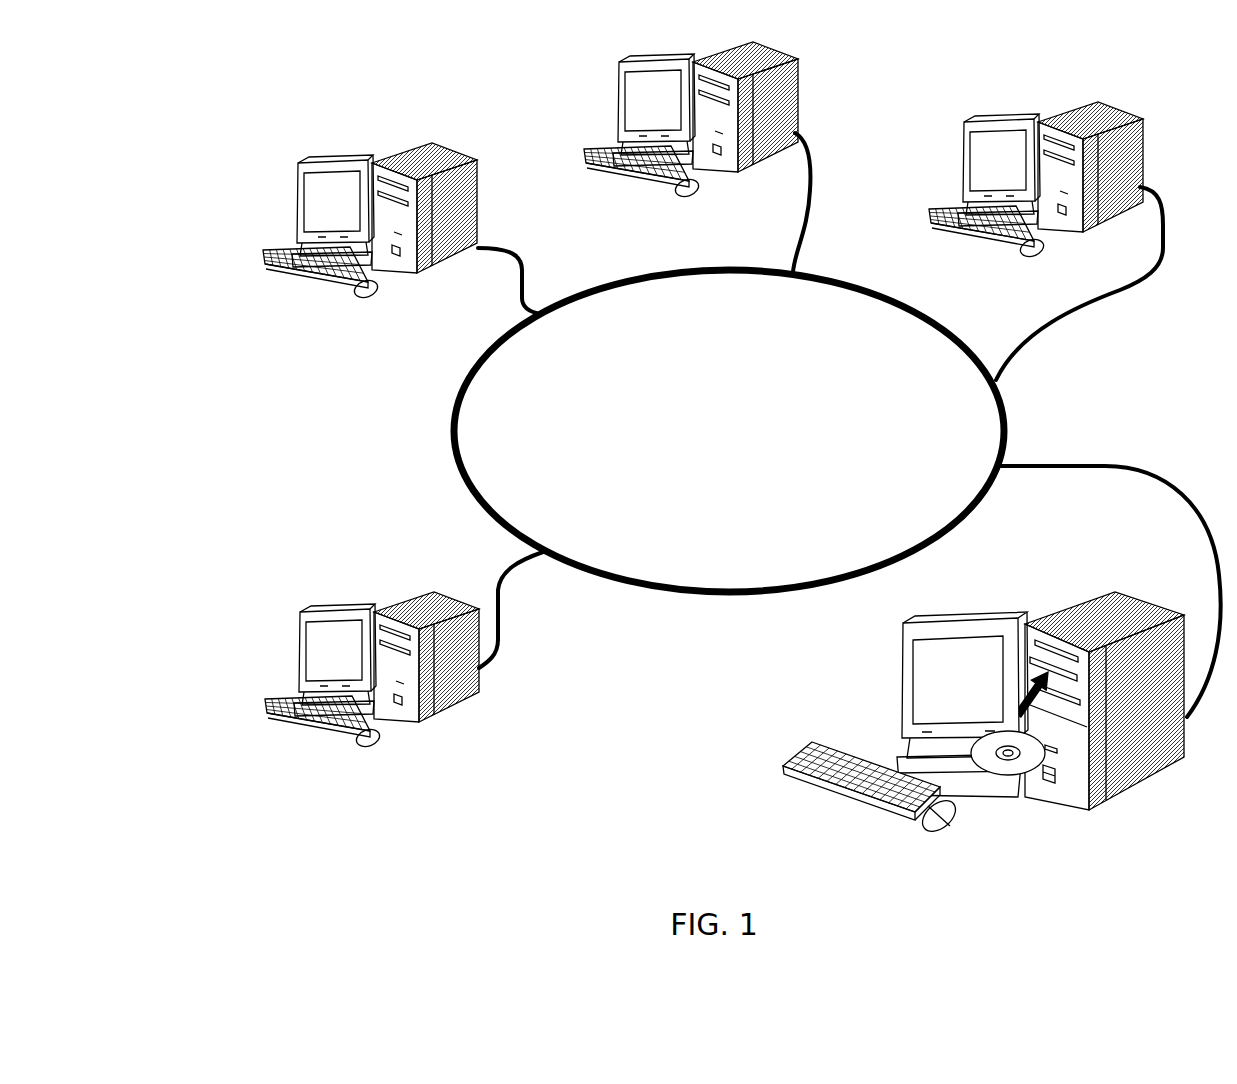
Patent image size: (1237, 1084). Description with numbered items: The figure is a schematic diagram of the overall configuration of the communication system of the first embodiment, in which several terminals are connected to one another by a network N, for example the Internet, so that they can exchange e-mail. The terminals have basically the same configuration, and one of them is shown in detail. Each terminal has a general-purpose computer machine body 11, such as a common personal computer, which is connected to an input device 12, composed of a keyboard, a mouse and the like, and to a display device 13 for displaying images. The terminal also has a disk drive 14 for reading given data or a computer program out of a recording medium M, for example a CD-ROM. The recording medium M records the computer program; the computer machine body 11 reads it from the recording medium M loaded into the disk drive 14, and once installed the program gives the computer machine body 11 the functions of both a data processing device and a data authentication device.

The computer machine body 11 is at (1077, 813).
The input device 12 is at (832, 793).
The display device 13 is at (902, 698).
The disk drive 14 is at (1047, 663).
The recording medium M is at (1027, 793).
The network N is at (729, 431).